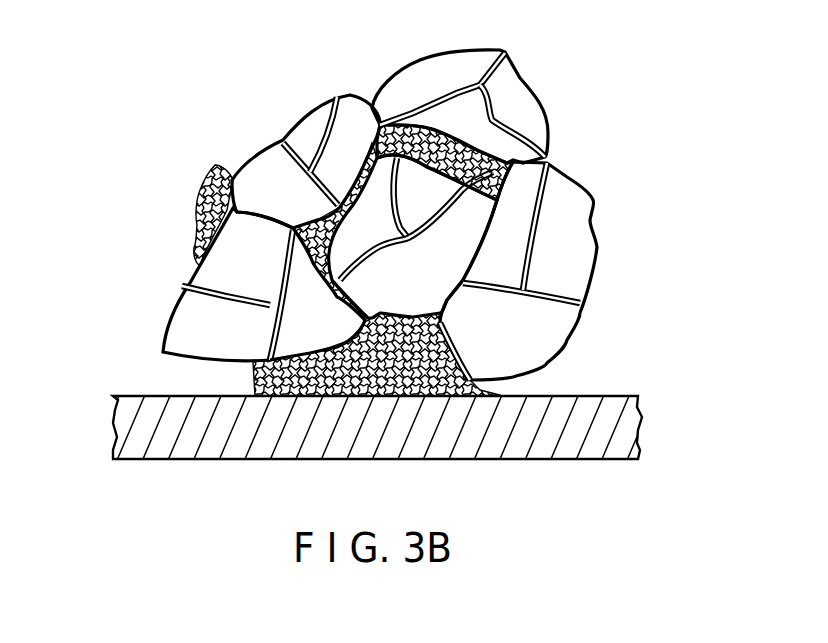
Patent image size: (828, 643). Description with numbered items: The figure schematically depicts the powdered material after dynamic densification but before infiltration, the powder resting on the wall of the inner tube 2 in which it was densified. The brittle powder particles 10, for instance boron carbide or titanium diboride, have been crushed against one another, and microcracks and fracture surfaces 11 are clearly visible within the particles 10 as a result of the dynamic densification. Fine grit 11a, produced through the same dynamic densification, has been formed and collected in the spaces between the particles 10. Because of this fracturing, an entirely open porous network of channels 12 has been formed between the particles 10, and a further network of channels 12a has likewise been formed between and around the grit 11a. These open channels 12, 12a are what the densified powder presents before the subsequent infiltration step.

The inner tube 2 is at (537, 435).
The particles 10 is at (420, 83).
The microcracks and fracture surfaces 11 is at (507, 80).
The grit 11a is at (547, 160).
The open porous network of channels 12 is at (327, 115).
The network of channels 12a is at (197, 205).